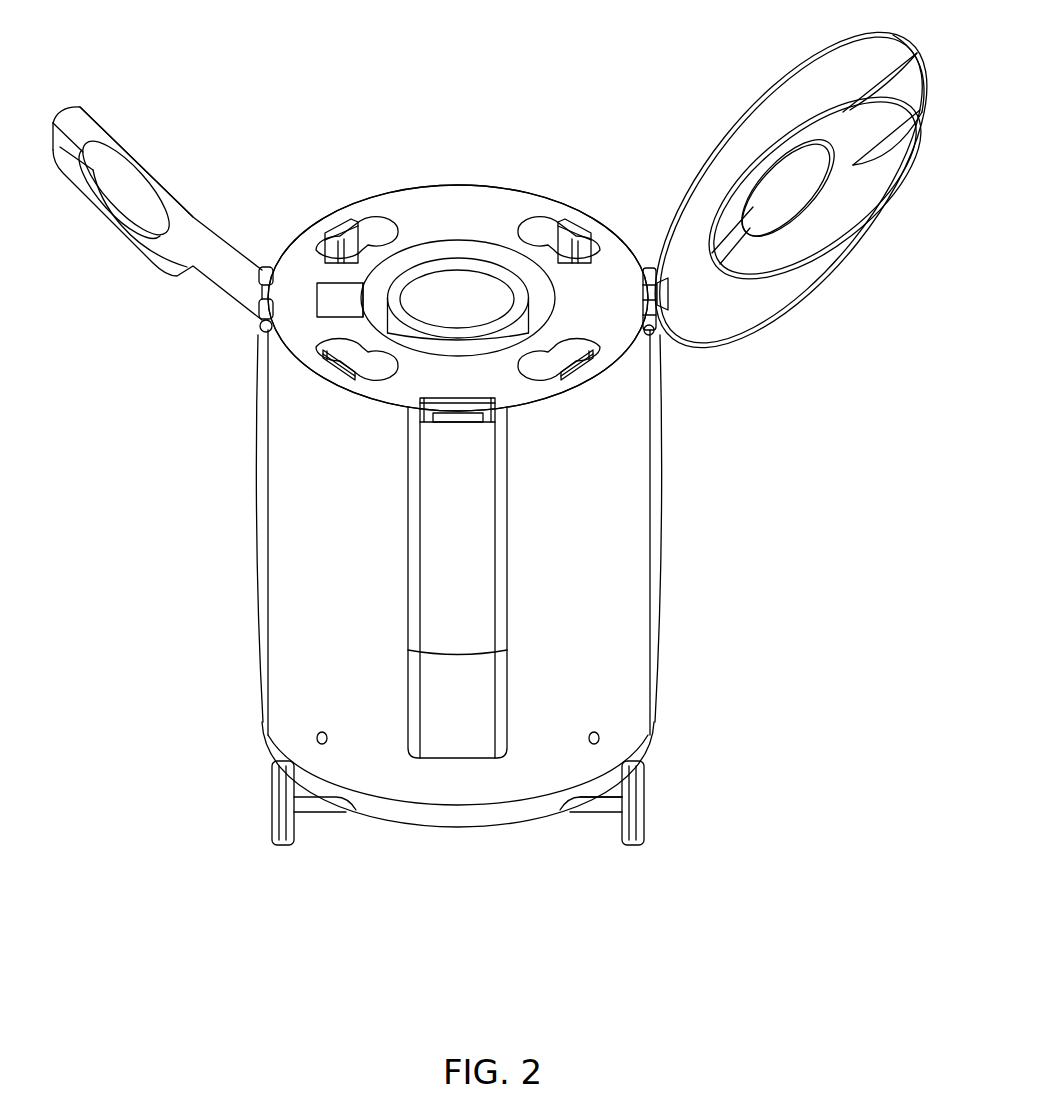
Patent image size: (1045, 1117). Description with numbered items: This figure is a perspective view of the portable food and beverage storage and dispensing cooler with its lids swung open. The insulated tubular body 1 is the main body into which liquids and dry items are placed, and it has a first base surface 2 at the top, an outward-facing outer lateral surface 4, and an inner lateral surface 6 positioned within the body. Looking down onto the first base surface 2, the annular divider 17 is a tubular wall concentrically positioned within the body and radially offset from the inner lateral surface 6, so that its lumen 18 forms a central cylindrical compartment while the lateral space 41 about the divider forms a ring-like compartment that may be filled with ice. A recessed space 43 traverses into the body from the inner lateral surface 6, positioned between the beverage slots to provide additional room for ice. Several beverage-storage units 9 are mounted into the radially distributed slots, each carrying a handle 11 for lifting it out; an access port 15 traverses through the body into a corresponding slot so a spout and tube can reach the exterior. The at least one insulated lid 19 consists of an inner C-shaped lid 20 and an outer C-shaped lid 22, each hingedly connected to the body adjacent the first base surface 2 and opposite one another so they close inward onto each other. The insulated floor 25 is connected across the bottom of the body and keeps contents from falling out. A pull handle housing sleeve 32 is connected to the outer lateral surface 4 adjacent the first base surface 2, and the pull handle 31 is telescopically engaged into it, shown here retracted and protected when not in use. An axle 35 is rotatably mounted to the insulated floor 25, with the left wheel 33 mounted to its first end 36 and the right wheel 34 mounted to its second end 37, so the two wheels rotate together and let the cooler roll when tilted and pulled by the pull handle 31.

The insulated tubular body 1 is at (452, 175).
The first base surface 2 is at (422, 385).
The outer lateral surface 4 is at (595, 539).
The inner lateral surface 6 is at (383, 301).
The beverage-storage units 9 is at (305, 249).
The handle 11 is at (344, 225).
The access port 15 is at (314, 735).
The annular divider 17 is at (477, 262).
The lumen 18 is at (458, 284).
The insulated lid 19 is at (78, 237).
The inner C-shaped lid 20 is at (130, 138).
The outer C-shaped lid 22 is at (828, 52).
The insulated floor 25 is at (652, 732).
The pull handle 31 is at (461, 406).
The pull handle housing sleeve 32 is at (500, 440).
The left wheel 33 is at (644, 801).
The right wheel 34 is at (273, 791).
The axle 35 is at (586, 815).
The first end 36 is at (614, 808).
The second end 37 is at (301, 810).
The lateral space 41 is at (536, 311).
The recessed space 43 is at (337, 302).